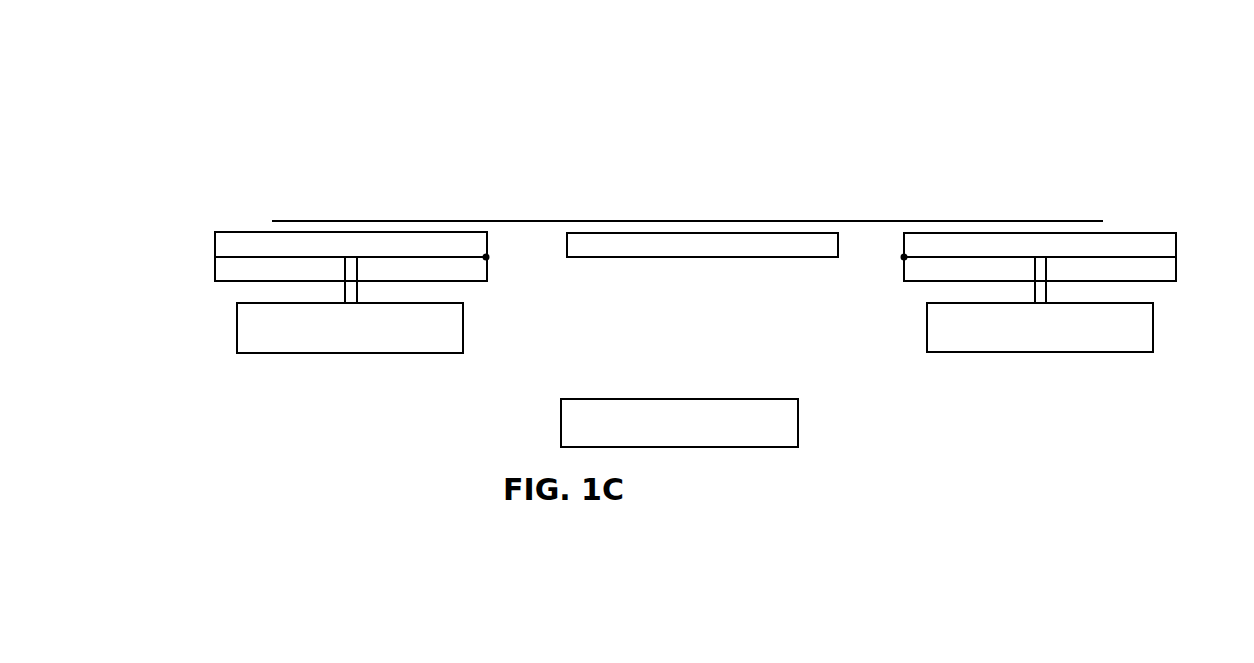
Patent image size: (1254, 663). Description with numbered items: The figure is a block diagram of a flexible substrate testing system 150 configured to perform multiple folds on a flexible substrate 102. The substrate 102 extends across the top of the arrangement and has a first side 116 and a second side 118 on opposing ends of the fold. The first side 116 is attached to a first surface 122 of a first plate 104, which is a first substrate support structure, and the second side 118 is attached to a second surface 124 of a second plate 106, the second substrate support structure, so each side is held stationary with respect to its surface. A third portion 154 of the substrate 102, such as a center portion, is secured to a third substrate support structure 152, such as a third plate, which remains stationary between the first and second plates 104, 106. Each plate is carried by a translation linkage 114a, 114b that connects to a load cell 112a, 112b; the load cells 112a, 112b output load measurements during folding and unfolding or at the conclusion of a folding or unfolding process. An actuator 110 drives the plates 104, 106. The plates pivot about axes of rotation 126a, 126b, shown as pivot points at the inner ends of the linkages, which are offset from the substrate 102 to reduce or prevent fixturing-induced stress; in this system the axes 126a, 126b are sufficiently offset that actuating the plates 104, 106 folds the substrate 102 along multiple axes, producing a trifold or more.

The flexible substrate testing system 150 is at (199, 74).
The flexible substrate 102 is at (332, 221).
The first plate 104 is at (1127, 233).
The second plate 106 is at (215, 244).
The actuator 110 is at (632, 399).
The first load cell 112a is at (1092, 352).
The second load cell 112b is at (237, 343).
The first translation linkage 114a is at (1145, 281).
The second translation linkage 114b is at (215, 263).
The first side 116 is at (993, 198).
The second side 118 is at (362, 200).
The first surface 122 is at (1082, 233).
The second surface 124 is at (255, 232).
The axis of rotation 126a is at (904, 257).
The axis of rotation 126b is at (486, 257).
The third substrate support structure 152 is at (713, 257).
The third portion 154 is at (702, 197).